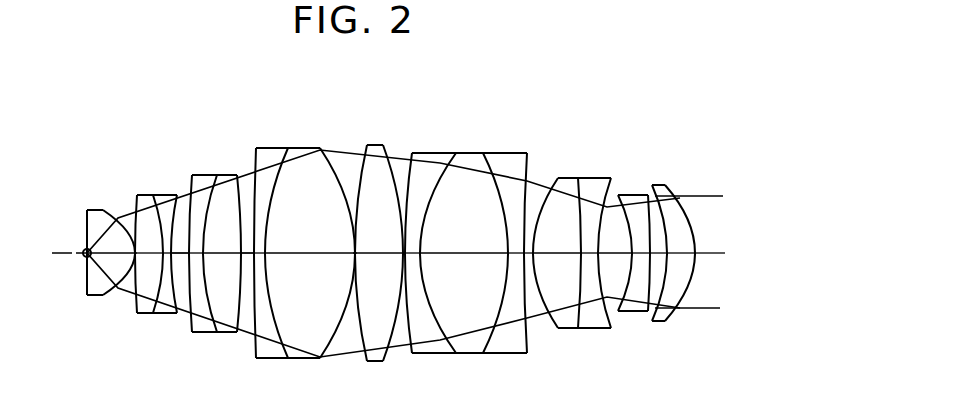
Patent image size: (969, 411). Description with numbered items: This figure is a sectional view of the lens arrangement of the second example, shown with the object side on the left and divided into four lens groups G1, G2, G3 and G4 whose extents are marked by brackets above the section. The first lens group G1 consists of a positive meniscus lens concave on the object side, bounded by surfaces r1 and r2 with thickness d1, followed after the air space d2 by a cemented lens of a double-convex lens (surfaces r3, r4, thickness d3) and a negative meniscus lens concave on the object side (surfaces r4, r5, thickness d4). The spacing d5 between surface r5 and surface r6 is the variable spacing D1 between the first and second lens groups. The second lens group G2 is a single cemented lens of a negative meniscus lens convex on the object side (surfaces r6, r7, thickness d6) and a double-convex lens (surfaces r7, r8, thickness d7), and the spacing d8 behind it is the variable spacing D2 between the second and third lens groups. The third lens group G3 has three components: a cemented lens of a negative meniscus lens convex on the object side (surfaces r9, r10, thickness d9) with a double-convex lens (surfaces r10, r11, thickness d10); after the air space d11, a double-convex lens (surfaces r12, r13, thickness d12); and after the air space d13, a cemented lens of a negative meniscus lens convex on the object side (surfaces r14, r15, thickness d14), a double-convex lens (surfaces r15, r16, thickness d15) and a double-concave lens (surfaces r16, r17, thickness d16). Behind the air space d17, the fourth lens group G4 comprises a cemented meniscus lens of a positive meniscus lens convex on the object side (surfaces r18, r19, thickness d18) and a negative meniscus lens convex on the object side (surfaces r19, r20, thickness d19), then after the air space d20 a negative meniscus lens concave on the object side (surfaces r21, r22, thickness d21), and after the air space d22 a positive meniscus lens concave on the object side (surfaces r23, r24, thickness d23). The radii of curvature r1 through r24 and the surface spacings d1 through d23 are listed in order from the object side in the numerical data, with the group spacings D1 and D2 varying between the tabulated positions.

The first lens group G1 is at (178, 98).
The second lens group G2 is at (243, 98).
The third lens group G3 is at (540, 98).
The fourth lens group G4 is at (700, 97).
The first surface radius of curvature r1 is at (84, 234).
The second surface radius of curvature r2 is at (105, 210).
The third surface radius of curvature r3 is at (137, 203).
The fourth surface radius of curvature r4 is at (153, 195).
The fifth surface radius of curvature r5 is at (177, 195).
The sixth surface radius of curvature r6 is at (192, 175).
The seventh surface radius of curvature r7 is at (217, 175).
The eighth surface radius of curvature r8 is at (237, 175).
The ninth surface radius of curvature r9 is at (258, 148).
The tenth surface radius of curvature r10 is at (290, 150).
The eleventh surface radius of curvature r11 is at (322, 150).
The twelfth surface radius of curvature r12 is at (368, 145).
The thirteenth surface radius of curvature r13 is at (384, 146).
The fourteenth surface radius of curvature r14 is at (413, 153).
The fifteenth surface radius of curvature r15 is at (456, 153).
The sixteenth surface radius of curvature r16 is at (483, 152).
The seventeenth surface radius of curvature r17 is at (519, 153).
The eighteenth surface radius of curvature r18 is at (553, 178).
The nineteenth surface radius of curvature r19 is at (577, 178).
The twentieth surface radius of curvature r20 is at (605, 178).
The twenty-first surface radius of curvature r21 is at (627, 195).
The twenty-second surface radius of curvature r22 is at (645, 190).
The twenty-third surface radius of curvature r23 is at (667, 187).
The twenty-fourth surface radius of curvature r24 is at (692, 224).
The first surface spacing d1 is at (111, 268).
The second surface spacing d2 is at (122, 294).
The third surface spacing d3 is at (149, 268).
The fourth surface spacing d4 is at (150, 314).
The fifth surface spacing d5 is at (183, 316).
The sixth surface spacing d6 is at (200, 333).
The seventh surface spacing d7 is at (222, 268).
The eighth surface spacing d8 is at (245, 332).
The ninth surface spacing d9 is at (275, 360).
The tenth surface spacing d10 is at (310, 267).
The eleventh surface spacing d11 is at (356, 305).
The twelfth surface spacing d12 is at (379, 268).
The thirteenth surface spacing d13 is at (399, 358).
The fourteenth surface spacing d14 is at (439, 354).
The fifteenth surface spacing d15 is at (464, 268).
The sixteenth surface spacing d16 is at (513, 353).
The seventeenth surface spacing d17 is at (537, 318).
The eighteenth surface spacing d18 is at (557, 268).
The nineteenth surface spacing d19 is at (592, 329).
The twentieth surface spacing d20 is at (615, 267).
The twenty-first surface spacing d21 is at (634, 312).
The twenty-second surface spacing d22 is at (660, 323).
The twenty-third surface spacing d23 is at (693, 305).
The first variable spacing D1 is at (169, 306).
The second variable spacing D2 is at (251, 329).